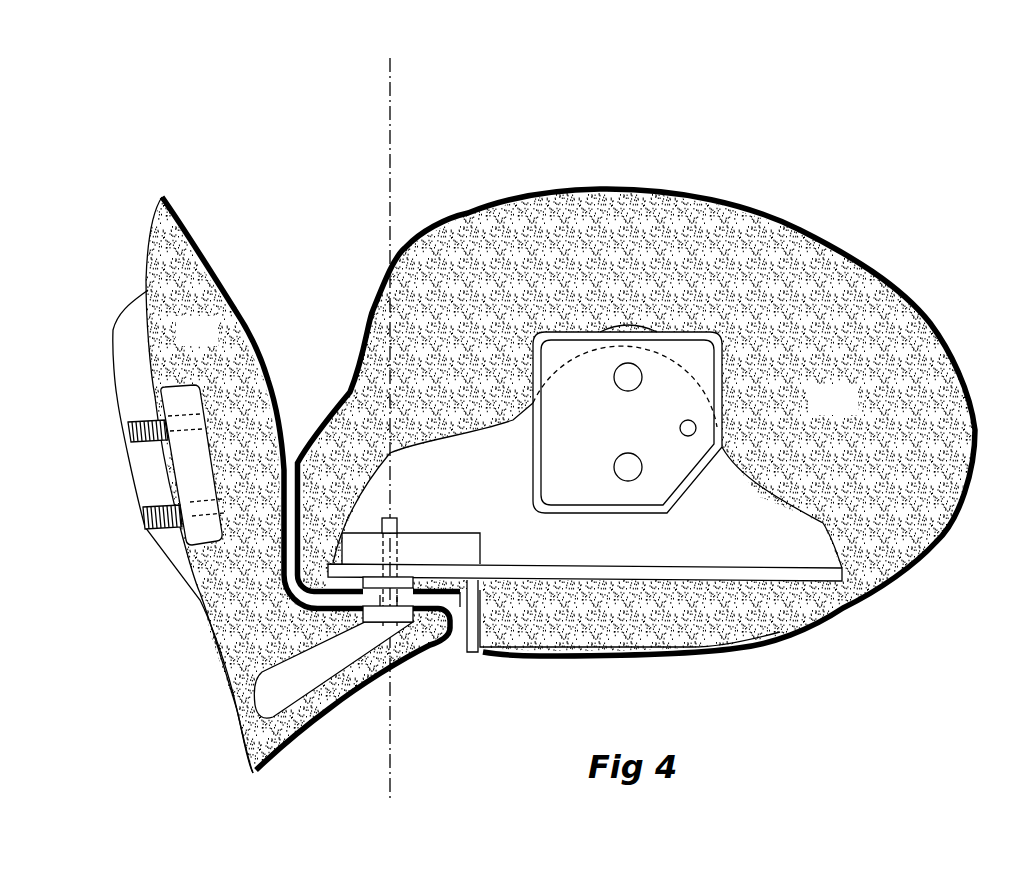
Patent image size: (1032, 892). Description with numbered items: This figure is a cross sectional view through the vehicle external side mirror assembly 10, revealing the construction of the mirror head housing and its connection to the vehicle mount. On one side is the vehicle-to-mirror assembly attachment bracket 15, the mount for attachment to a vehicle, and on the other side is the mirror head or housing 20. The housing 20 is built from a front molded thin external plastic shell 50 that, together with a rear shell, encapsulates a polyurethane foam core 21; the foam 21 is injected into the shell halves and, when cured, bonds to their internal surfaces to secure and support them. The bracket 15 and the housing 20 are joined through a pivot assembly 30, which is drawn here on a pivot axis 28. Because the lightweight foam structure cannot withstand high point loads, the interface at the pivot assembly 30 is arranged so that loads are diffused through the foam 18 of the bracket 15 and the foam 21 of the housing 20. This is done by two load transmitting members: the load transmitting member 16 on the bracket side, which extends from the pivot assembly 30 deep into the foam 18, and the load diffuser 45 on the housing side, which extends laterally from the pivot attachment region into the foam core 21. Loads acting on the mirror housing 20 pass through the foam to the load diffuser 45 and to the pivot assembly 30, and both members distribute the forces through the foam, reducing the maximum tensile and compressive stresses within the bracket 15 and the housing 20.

The mirror assembly 10 is at (724, 138).
The vehicle-to-mirror assembly attachment bracket 15 is at (222, 205).
The load transmitting member 16 is at (283, 683).
The foam 18 is at (197, 331).
The mirror head 20 is at (829, 233).
The polyurethane foam core 21 is at (833, 400).
The pivot axis 28 is at (393, 105).
The pivot assembly 30 is at (413, 622).
The load diffuser 45 is at (490, 443).
The front molded thin external plastic shell 50 is at (918, 297).